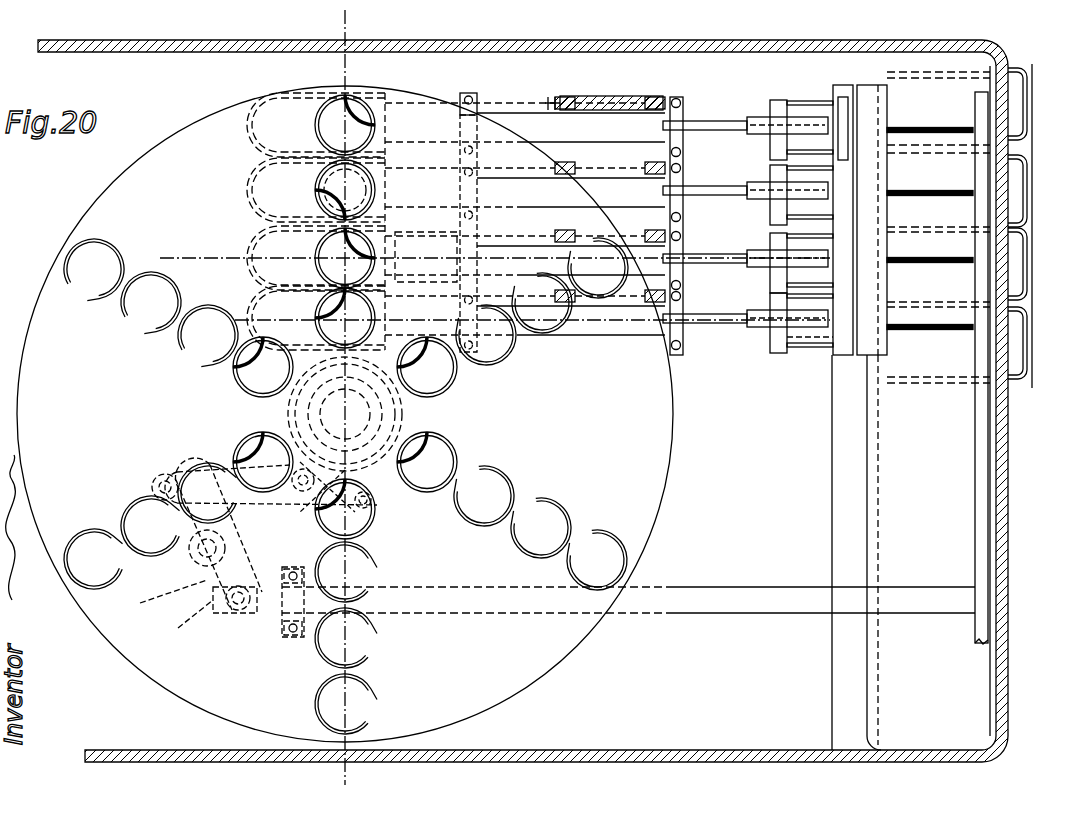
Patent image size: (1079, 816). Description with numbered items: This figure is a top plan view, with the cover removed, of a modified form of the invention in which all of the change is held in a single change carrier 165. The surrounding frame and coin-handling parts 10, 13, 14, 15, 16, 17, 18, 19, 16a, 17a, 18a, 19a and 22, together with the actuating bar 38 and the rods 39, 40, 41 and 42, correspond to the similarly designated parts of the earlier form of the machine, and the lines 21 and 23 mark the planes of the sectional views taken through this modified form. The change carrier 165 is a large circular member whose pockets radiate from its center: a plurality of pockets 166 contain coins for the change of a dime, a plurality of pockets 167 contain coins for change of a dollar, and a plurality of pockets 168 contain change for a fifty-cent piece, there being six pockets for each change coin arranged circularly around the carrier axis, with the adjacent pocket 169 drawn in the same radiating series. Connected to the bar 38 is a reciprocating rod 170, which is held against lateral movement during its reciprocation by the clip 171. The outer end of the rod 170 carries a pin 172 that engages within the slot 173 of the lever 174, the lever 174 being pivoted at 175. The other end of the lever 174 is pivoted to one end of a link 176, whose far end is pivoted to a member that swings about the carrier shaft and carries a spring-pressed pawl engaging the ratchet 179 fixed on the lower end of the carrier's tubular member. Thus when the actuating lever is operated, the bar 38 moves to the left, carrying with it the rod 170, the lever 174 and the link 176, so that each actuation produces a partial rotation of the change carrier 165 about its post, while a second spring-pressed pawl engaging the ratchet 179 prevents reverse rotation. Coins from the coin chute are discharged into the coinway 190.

The frame part 10 is at (646, 42).
The frame part 13 is at (998, 446).
The frame part 14 is at (808, 552).
The frame part 15 is at (843, 358).
The coin part 16 is at (1018, 343).
The coin part 17 is at (1018, 264).
The coin part 18 is at (1018, 191).
The coin part 19 is at (1018, 104).
The coin part 16a is at (316, 318).
The coin part 17a is at (316, 258).
The coin part 18a is at (316, 190).
The coin part 19a is at (316, 125).
The section line 21 is at (312, 20).
The frame part 22 is at (270, 318).
The section line 23 is at (235, 250).
The actuating bar 38 is at (972, 438).
The rod 39 is at (912, 325).
The rod 40 is at (912, 258).
The rod 41 is at (912, 192).
The rod 42 is at (912, 128).
The change carrier 165 is at (675, 428).
The pockets 166 is at (458, 460).
The pockets 167 is at (506, 492).
The pockets 168 is at (553, 515).
The spring clip 169 is at (600, 540).
The reciprocating rod 170 is at (712, 603).
The clip 171 is at (290, 638).
The pin 172 is at (236, 622).
The slot 173 is at (182, 626).
The lever 174 is at (156, 602).
The pivot 175 is at (226, 548).
The link 176 is at (203, 485).
The ratchet 179 is at (378, 489).
The coinway 190 is at (769, 345).